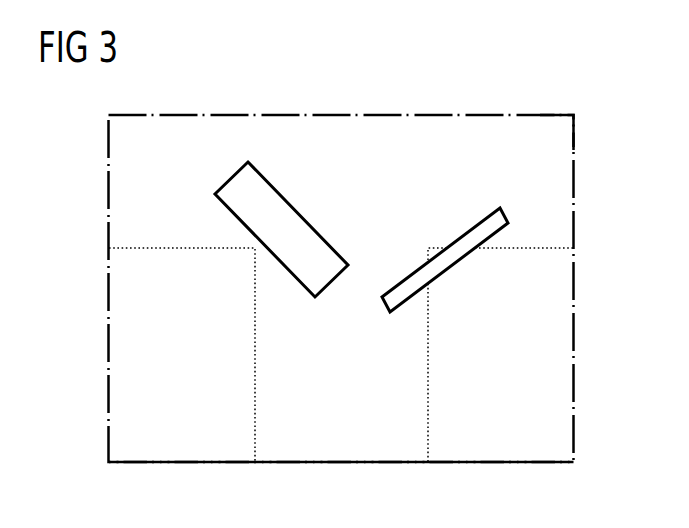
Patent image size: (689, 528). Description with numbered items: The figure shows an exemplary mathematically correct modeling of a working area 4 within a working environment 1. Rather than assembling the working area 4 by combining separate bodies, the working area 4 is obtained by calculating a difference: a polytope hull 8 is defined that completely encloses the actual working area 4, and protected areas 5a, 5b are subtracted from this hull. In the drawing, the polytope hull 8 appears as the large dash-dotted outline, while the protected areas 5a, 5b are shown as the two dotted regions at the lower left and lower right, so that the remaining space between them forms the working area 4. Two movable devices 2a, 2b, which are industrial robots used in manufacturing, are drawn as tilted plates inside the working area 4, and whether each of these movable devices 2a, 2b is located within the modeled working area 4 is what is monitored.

The working environment 1 is at (92, 173).
The polytope hull 8 is at (584, 126).
The protected area 5a is at (107, 385).
The protected area 5b is at (577, 384).
The working area 4 is at (341, 463).
The movable device 2a is at (298, 210).
The movable device 2b is at (473, 228).